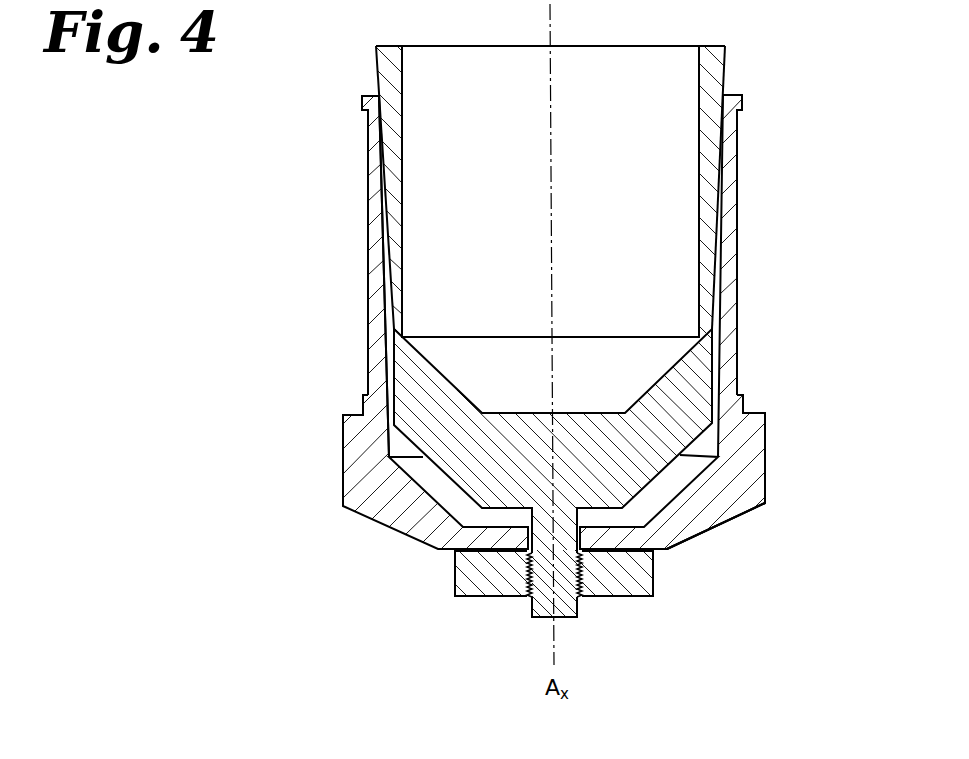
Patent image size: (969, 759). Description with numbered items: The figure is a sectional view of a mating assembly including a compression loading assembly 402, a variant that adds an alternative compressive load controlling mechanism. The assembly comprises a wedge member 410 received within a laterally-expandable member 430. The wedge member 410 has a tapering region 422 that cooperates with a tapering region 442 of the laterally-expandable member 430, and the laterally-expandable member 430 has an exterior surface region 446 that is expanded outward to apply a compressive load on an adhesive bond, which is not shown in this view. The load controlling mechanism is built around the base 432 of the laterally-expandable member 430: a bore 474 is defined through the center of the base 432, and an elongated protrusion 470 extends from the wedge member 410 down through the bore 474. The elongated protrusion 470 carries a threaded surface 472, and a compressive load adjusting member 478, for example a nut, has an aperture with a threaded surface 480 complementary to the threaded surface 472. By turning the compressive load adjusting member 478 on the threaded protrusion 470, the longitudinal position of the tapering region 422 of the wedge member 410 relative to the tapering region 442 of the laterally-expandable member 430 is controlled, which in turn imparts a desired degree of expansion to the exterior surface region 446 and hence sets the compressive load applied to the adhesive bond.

The compression loading assembly 402 is at (786, 508).
The wedge member 410 is at (425, 373).
The tapering region 422 is at (388, 135).
The laterally-expandable member 430 is at (348, 484).
The base 432 is at (625, 539).
The tapering region 442 is at (388, 205).
The exterior surface region 446 is at (368, 313).
The elongated protrusion 470 is at (562, 590).
The threaded surface 472 is at (527, 583).
The bore 474 is at (505, 551).
The compressive load adjusting member 478 is at (625, 578).
The threaded surface 480 is at (578, 612).